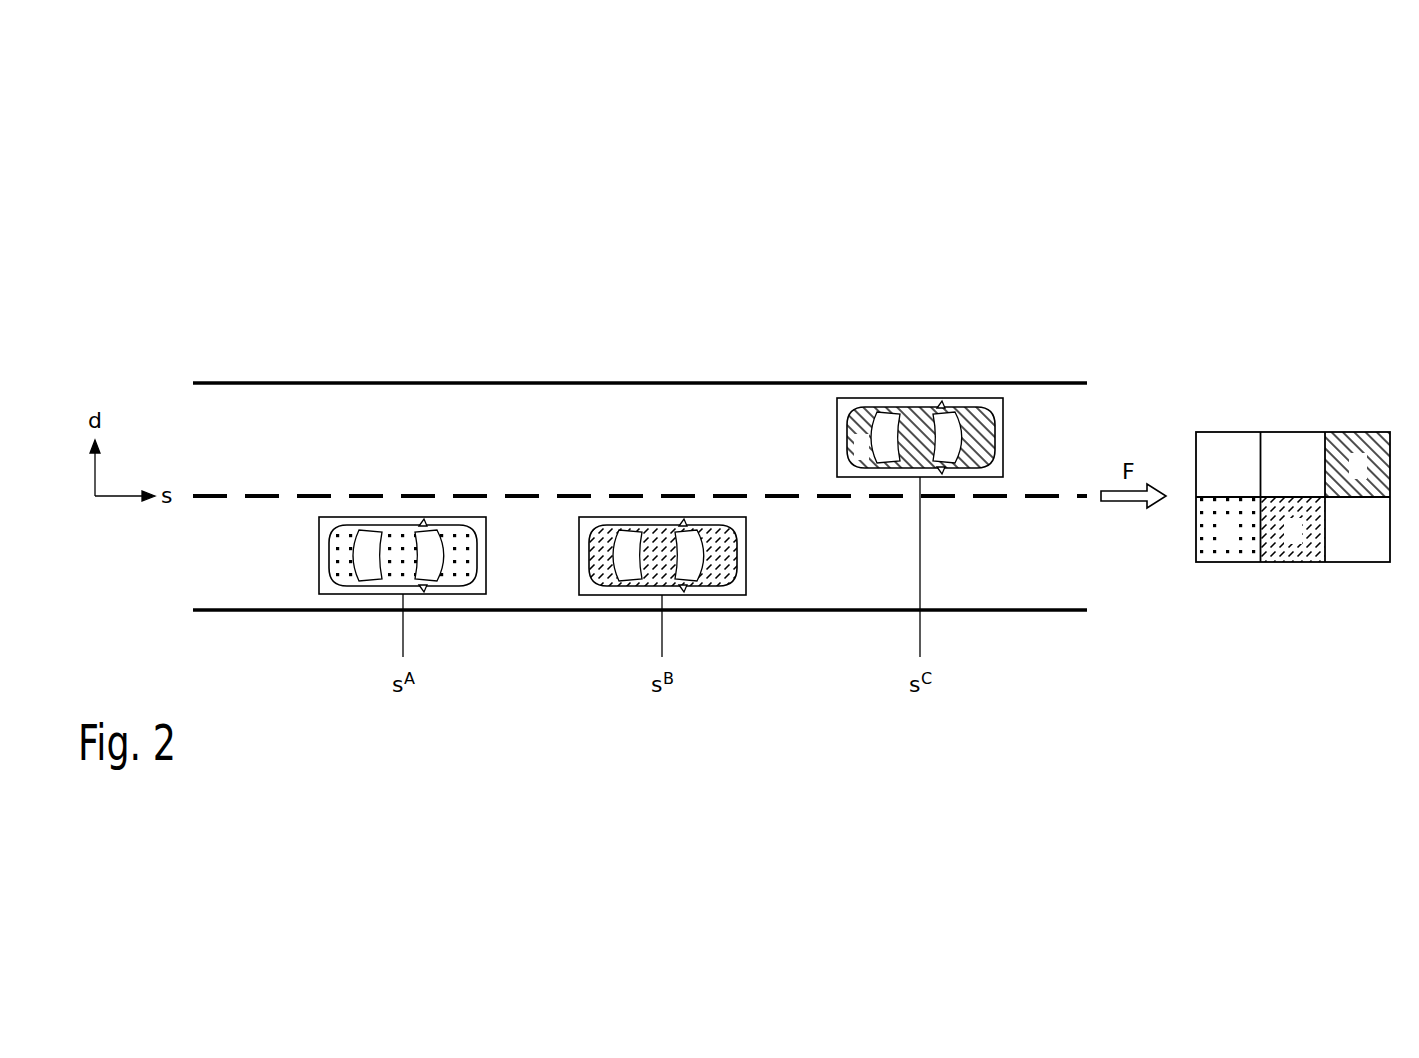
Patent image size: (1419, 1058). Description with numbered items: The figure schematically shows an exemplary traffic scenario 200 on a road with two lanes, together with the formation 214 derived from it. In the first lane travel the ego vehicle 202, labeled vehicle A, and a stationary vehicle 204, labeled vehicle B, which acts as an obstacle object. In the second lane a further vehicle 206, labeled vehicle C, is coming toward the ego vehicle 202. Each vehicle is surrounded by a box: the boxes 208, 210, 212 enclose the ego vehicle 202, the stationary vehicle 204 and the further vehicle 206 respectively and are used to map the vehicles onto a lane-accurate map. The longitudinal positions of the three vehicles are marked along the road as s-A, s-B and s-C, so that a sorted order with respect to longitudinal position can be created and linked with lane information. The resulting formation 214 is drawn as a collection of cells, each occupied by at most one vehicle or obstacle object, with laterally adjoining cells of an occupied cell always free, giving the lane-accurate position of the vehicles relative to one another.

The traffic scenario 200 is at (229, 246).
The ego vehicle 202 is at (344, 538).
The stationary vehicle 204 is at (602, 538).
The further vehicle 206 is at (866, 412).
The box 208 is at (458, 517).
The box 210 is at (718, 517).
The box 212 is at (982, 398).
The formation 214 is at (1293, 432).